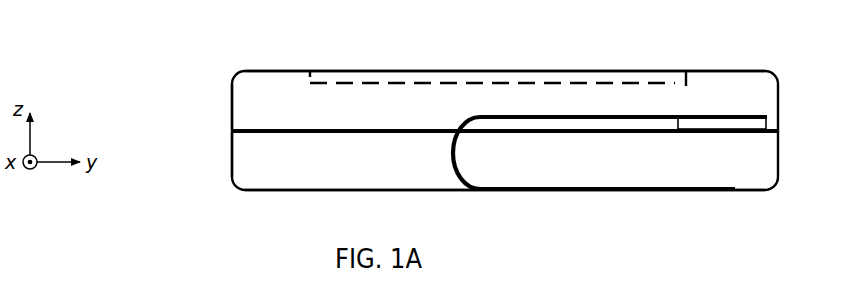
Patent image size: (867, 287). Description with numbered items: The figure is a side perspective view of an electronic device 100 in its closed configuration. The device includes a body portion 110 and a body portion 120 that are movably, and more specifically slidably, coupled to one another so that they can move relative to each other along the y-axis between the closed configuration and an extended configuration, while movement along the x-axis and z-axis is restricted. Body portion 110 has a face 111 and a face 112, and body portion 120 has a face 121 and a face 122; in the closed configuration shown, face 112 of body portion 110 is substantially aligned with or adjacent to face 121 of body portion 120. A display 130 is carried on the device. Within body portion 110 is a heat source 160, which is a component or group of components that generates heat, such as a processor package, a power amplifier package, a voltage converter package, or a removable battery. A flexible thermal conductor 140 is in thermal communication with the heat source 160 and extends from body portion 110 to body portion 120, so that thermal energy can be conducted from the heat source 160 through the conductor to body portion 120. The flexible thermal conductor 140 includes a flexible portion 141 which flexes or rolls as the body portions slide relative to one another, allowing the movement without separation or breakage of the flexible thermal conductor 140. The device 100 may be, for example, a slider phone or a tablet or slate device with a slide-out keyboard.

The electronic device 100 is at (103, 61).
The body portion 110 is at (771, 72).
The face 111 is at (260, 61).
The face 112 is at (231, 115).
The body portion 120 is at (763, 192).
The face 121 is at (232, 146).
The face 122 is at (260, 203).
The display 130 is at (476, 66).
The flexible thermal conductor 140 is at (686, 193).
The flexible portion 141 is at (436, 163).
The heat source 160 is at (766, 125).